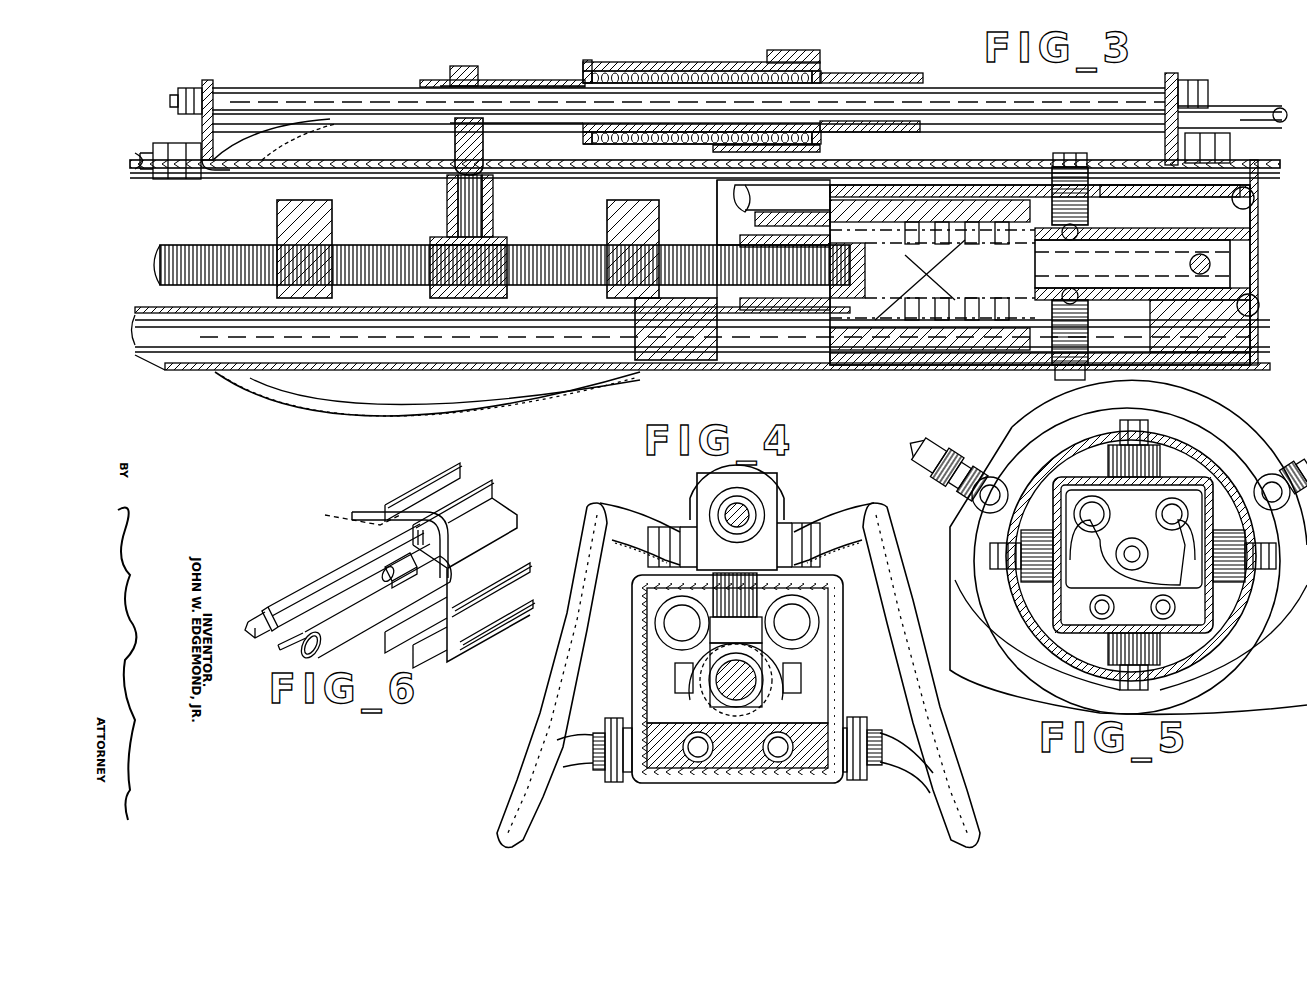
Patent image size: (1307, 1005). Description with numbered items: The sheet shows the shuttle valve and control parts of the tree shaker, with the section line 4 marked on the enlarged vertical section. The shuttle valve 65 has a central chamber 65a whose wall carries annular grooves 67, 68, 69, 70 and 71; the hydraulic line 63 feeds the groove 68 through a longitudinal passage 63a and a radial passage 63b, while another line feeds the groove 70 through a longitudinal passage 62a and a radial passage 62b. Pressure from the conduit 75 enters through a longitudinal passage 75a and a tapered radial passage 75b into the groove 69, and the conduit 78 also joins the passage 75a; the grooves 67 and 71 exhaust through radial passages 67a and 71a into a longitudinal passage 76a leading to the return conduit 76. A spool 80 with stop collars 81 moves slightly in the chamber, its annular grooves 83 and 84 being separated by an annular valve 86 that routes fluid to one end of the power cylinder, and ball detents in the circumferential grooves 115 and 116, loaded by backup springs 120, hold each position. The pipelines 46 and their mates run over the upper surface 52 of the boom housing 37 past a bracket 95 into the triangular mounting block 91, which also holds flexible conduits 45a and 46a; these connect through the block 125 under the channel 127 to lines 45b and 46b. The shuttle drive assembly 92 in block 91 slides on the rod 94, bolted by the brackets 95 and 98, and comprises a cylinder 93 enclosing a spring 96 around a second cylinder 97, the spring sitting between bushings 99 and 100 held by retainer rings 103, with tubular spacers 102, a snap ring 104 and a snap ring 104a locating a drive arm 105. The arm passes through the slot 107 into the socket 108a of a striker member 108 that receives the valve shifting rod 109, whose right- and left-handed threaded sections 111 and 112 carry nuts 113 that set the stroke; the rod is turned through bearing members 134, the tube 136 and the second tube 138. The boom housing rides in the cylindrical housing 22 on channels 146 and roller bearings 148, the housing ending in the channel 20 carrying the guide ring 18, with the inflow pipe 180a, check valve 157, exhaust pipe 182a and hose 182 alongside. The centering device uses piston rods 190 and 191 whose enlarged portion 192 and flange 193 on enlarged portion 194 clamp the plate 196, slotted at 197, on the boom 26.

In FIG. 3, the section line 4 is at (150, 62).
In FIG. 3, the guide ring 18 is at (1050, 395).
In FIG. 5, the guide ring 18 is at (1060, 400).
In FIG. 5, the channel 20 is at (1045, 440).
In FIG. 5, the cylindrical housing 22 is at (1060, 655).
In FIG. 3, the boom 26 is at (288, 370).
In FIG. 4, the boom 26 is at (846, 776).
In FIG. 5, the boom 26 is at (1028, 648).
In FIG. 6, the boom 26 is at (513, 503).
In FIG. 3, the boom housing 37 is at (975, 170).
In FIG. 4, the boom housing 37 is at (775, 782).
In FIG. 5, the boom housing 37 is at (1248, 655).
In FIG. 6, the boom housing 37 is at (518, 537).
In FIG. 3, the pipeline 46 is at (1225, 112).
In FIG. 3, the flexible conduit 46a is at (300, 142).
In FIG. 4, the flexible conduit 46a is at (552, 706).
In FIG. 3, the line 46b is at (150, 322).
In FIG. 4, the line 46b is at (685, 775).
In FIG. 5, the line 46b is at (1075, 660).
In FIG. 4, the flexible conduit 45a is at (848, 512).
In FIG. 4, the line 45b is at (785, 768).
In FIG. 5, the line 45b is at (1215, 655).
In FIG. 3, the upper surface 52 is at (140, 165).
In FIG. 3, the longitudinal passage 62a is at (982, 330).
In FIG. 3, the radial passage 62b is at (945, 330).
In FIG. 3, the hydraulic line 63 is at (1260, 315).
In FIG. 3, the longitudinal passage 63a is at (912, 330).
In FIG. 3, the radial passage 63b is at (920, 318).
In FIG. 3, the shuttle valve 65 is at (830, 352).
In FIG. 4, the shuttle valve 65 is at (655, 669).
In FIG. 3, the central chamber 65a is at (965, 262).
In FIG. 3, the annular groove 67 is at (885, 222).
In FIG. 3, the radial passage 67a is at (893, 243).
In FIG. 3, the annular groove 68 is at (920, 222).
In FIG. 3, the annular groove 69 is at (965, 220).
In FIG. 4, the annular groove 69 is at (815, 712).
In FIG. 3, the annular groove 70 is at (998, 220).
In FIG. 3, the annular groove 71 is at (1012, 330).
In FIG. 3, the radial passage 71a is at (1025, 225).
In FIG. 3, the conduit 75 is at (735, 198).
In FIG. 4, the conduit 75 is at (665, 628).
In FIG. 5, the conduit 75 is at (1090, 497).
In FIG. 3, the longitudinal passage 75a is at (815, 210).
In FIG. 3, the radial passage 75b is at (950, 210).
In FIG. 4, the radial passage 75b is at (675, 665).
In FIG. 4, the conduit 76 is at (812, 628).
In FIG. 5, the conduit 76 is at (1172, 498).
In FIG. 3, the longitudinal passage 76a is at (900, 268).
In FIG. 3, the conduit 78 is at (1255, 203).
In FIG. 3, the spool 80 is at (780, 312).
In FIG. 3, the stop collar 81 is at (800, 320).
In FIG. 4, the stop collar 81 is at (670, 708).
In FIG. 3, the annular groove 83 is at (930, 271).
In FIG. 3, the annular groove 84 is at (985, 295).
In FIG. 3, the annular valve 86 is at (970, 260).
In FIG. 3, the mounting block 91 is at (770, 60).
In FIG. 4, the mounting block 91 is at (785, 503).
In FIG. 3, the shuttle drive assembly 92 is at (615, 56).
In FIG. 4, the shuttle drive assembly 92 is at (786, 477).
In FIG. 3, the cylinder 93 is at (658, 68).
In FIG. 3, the rod 94 is at (245, 90).
In FIG. 4, the rod 94 is at (728, 507).
In FIG. 3, the bracket 95 is at (1180, 78).
In FIG. 3, the spring 96 is at (712, 68).
In FIG. 3, the second cylinder 97 is at (465, 80).
In FIG. 4, the second cylinder 97 is at (718, 510).
In FIG. 3, the bracket 98 is at (200, 125).
In FIG. 3, the bushing 99 is at (580, 140).
In FIG. 3, the bushing 100 is at (800, 52).
In FIG. 3, the tubular spacer 102 is at (470, 70).
In FIG. 3, the retainer ring 103 is at (585, 64).
In FIG. 3, the snap ring 104 is at (935, 78).
In FIG. 3, the snap ring 104a is at (450, 74).
In FIG. 4, the snap ring 104a is at (710, 513).
In FIG. 3, the drive arm 105 is at (483, 195).
In FIG. 4, the drive arm 105 is at (755, 567).
In FIG. 3, the slot 107 is at (222, 180).
In FIG. 3, the striker member 108 is at (490, 240).
In FIG. 4, the striker member 108 is at (762, 672).
In FIG. 3, the socket 108a is at (462, 200).
In FIG. 4, the socket 108a is at (760, 585).
In FIG. 3, the valve shifting rod 109 is at (150, 266).
In FIG. 4, the valve shifting rod 109 is at (758, 680).
In FIG. 3, the threaded section 111 is at (225, 240).
In FIG. 3, the threaded section 112 is at (712, 235).
In FIG. 3, the nut 113 is at (312, 208).
In FIG. 4, the nut 113 is at (736, 662).
In FIG. 3, the circumferential groove 115 is at (1085, 276).
In FIG. 3, the circumferential groove 116 is at (1163, 267).
In FIG. 3, the backup spring 120 is at (1080, 232).
In FIG. 3, the block 125 is at (700, 360).
In FIG. 4, the block 125 is at (722, 770).
In FIG. 3, the channel 127 is at (150, 292).
In FIG. 4, the channel 127 is at (790, 700).
In FIG. 5, the channel 127 is at (1255, 640).
In FIG. 5, the bearing member 134 is at (1090, 590).
In FIG. 5, the tube 136 is at (1134, 572).
In FIG. 6, the second tube 138 is at (360, 648).
In FIG. 5, the channel 146 is at (1150, 458).
In FIG. 6, the channel 146 is at (458, 468).
In FIG. 5, the roller bearing 148 is at (1100, 456).
In FIG. 5, the check valve 157 is at (1105, 503).
In FIG. 5, the pipe 180a is at (1272, 472).
In FIG. 5, the hose 182 is at (922, 452).
In FIG. 5, the pipe 182a is at (980, 508).
In FIG. 6, the piston rod 190 is at (282, 652).
In FIG. 6, the piston rod 191 is at (248, 625).
In FIG. 6, the enlarged portion 192 is at (420, 567).
In FIG. 6, the flange 193 is at (330, 512).
In FIG. 6, the enlarged portion 194 is at (335, 570).
In FIG. 6, the plate 196 is at (378, 512).
In FIG. 6, the slot 197 is at (425, 540).